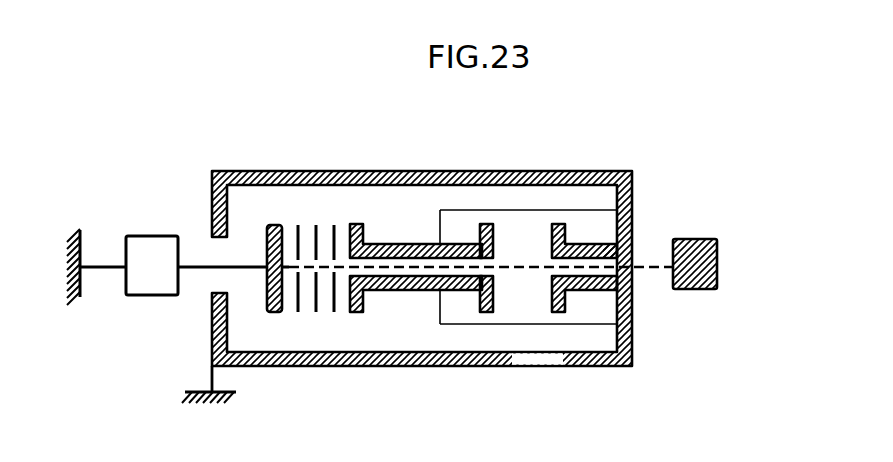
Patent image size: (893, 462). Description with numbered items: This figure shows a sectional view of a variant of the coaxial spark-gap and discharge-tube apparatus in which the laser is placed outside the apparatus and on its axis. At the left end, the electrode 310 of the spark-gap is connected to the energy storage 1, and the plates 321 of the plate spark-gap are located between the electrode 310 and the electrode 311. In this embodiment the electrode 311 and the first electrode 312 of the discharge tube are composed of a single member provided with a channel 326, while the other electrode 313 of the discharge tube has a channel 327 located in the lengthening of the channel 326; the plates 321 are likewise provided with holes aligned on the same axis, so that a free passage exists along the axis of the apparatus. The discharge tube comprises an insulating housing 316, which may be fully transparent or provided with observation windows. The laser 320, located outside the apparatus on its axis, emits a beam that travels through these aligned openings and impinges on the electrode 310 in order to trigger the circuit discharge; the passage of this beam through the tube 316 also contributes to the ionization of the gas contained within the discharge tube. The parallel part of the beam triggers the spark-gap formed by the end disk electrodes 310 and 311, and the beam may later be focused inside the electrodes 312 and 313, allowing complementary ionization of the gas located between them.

The energy storage 1 is at (150, 258).
The electrode 310 is at (271, 224).
The electrode 311 is at (355, 224).
The first electrode of the discharge tube 312 is at (485, 224).
The other electrode of the discharge tube 313 is at (557, 224).
The housing 316 is at (463, 310).
The laser 320 is at (693, 272).
The plates 321 is at (296, 292).
The channel 326 is at (392, 275).
The channel 327 is at (598, 248).